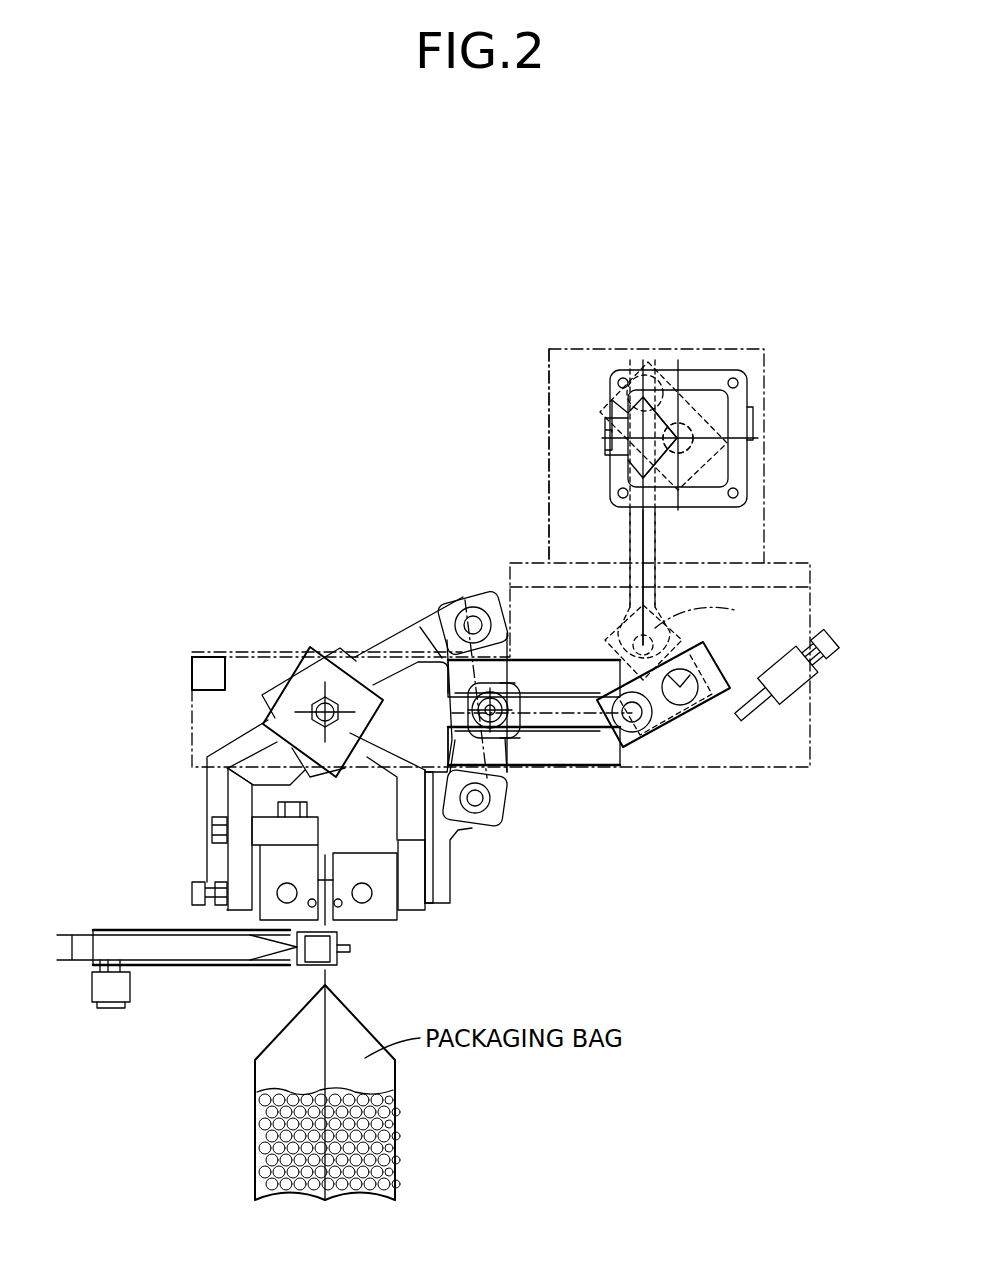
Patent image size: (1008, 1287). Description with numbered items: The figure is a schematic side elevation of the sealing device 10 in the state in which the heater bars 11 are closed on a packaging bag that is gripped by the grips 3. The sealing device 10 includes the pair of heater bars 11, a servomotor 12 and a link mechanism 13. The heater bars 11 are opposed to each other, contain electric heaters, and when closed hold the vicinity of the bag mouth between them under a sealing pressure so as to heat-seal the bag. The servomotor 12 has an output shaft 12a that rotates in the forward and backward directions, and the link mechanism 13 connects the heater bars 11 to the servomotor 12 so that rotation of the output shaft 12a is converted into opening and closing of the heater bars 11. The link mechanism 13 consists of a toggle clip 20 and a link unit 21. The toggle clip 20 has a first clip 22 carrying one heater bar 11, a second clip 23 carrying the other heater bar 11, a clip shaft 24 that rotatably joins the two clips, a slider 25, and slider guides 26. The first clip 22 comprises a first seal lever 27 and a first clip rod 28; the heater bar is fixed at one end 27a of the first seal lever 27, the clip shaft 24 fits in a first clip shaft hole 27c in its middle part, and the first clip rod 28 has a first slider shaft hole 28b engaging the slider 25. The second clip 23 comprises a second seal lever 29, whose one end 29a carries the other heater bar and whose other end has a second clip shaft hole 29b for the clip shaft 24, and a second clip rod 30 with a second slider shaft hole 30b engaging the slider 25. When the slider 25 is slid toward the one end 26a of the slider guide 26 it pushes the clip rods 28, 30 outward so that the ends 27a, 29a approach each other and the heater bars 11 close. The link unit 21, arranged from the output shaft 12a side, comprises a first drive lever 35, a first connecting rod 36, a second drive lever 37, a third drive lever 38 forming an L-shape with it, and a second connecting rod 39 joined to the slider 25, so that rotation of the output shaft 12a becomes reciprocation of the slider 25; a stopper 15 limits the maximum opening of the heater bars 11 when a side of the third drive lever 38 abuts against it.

The grips 3 is at (192, 950).
The sealing device 10 is at (290, 450).
The heater bars 11 is at (280, 908).
The servomotor 12 is at (716, 404).
The output shaft 12a is at (662, 432).
The link mechanism 13 is at (492, 456).
The stopper 15 is at (778, 706).
The toggle clip 20 is at (282, 690).
The link unit 21 is at (715, 656).
The first clip 22 is at (235, 745).
The second clip 23 is at (455, 888).
The clip shaft 24 is at (322, 703).
The slider 25 is at (488, 710).
The slider guide 26 is at (563, 677).
The one end of the slider guide 26a is at (462, 742).
The first seal lever 27 is at (228, 800).
The one end of the first seal lever 27a is at (240, 873).
The first clip shaft hole 27c is at (470, 605).
The first clip rod 28 is at (492, 660).
The first slider shaft hole 28b is at (498, 690).
The second seal lever 29 is at (440, 836).
The one end of the second seal lever 29a is at (425, 905).
The second clip shaft hole 29b is at (480, 805).
The second clip rod 30 is at (497, 753).
The second slider shaft hole 30b is at (513, 742).
The first drive lever 35 is at (680, 400).
The first connecting rod 36 is at (636, 532).
The second drive lever 37 is at (670, 625).
The third drive lever 38 is at (700, 722).
The second connecting rod 39 is at (598, 728).